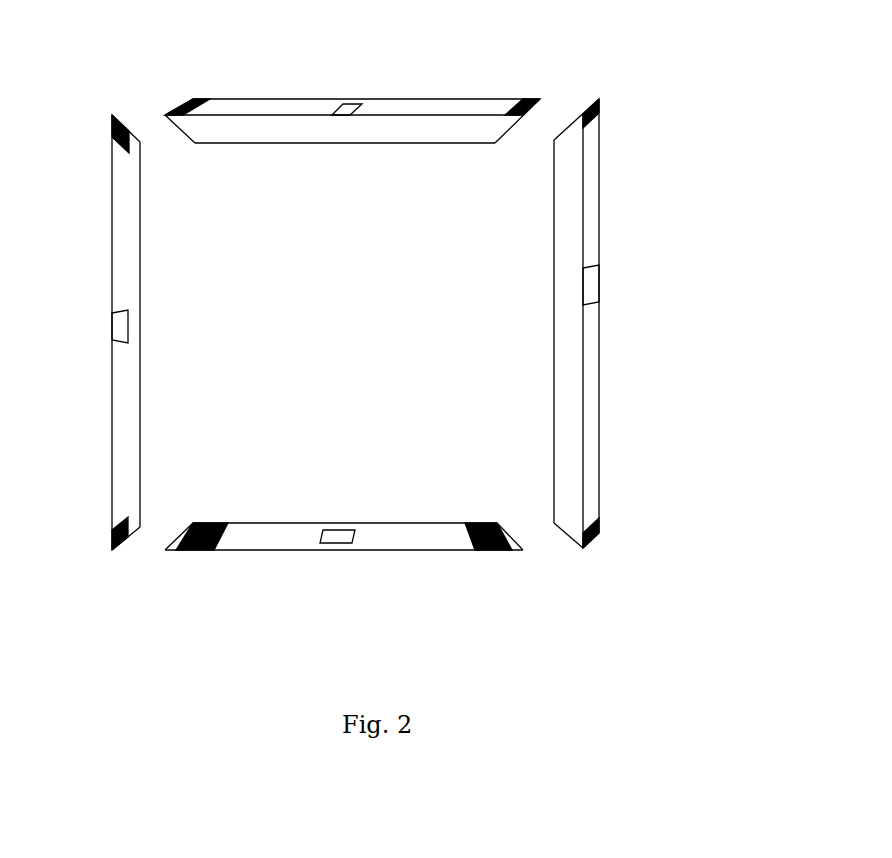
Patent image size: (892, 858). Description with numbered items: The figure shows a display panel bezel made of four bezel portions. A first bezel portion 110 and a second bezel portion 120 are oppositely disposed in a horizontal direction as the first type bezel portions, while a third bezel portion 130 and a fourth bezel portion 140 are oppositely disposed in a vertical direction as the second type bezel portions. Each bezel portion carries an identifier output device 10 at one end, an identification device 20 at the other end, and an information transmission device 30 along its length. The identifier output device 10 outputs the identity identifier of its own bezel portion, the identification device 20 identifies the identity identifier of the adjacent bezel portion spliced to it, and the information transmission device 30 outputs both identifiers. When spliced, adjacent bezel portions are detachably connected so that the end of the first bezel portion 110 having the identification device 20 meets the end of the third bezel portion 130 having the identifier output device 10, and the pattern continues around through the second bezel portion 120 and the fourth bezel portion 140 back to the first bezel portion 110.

The identifier output device 10 is at (192, 101).
The identification device 20 is at (526, 100).
The information transmission device 30 is at (348, 104).
The first bezel portion 110 is at (408, 102).
The second bezel portion 120 is at (408, 535).
The third bezel portion 130 is at (595, 242).
The fourth bezel portion 140 is at (133, 373).